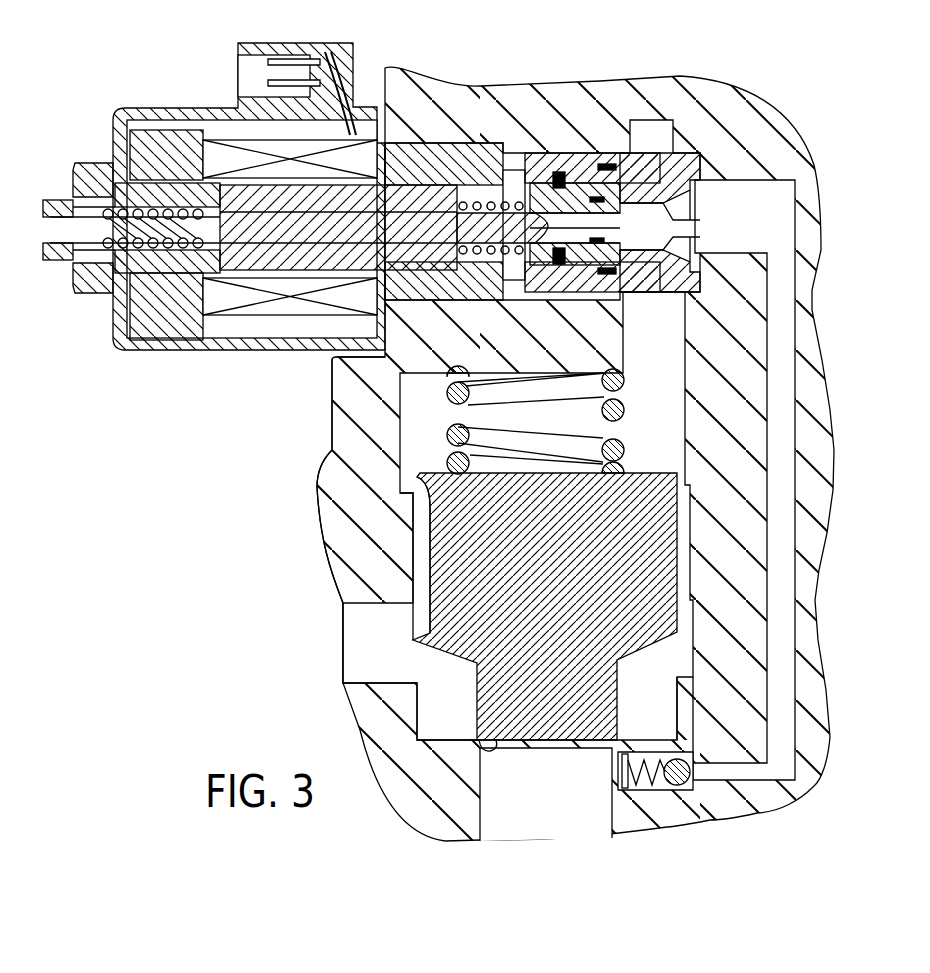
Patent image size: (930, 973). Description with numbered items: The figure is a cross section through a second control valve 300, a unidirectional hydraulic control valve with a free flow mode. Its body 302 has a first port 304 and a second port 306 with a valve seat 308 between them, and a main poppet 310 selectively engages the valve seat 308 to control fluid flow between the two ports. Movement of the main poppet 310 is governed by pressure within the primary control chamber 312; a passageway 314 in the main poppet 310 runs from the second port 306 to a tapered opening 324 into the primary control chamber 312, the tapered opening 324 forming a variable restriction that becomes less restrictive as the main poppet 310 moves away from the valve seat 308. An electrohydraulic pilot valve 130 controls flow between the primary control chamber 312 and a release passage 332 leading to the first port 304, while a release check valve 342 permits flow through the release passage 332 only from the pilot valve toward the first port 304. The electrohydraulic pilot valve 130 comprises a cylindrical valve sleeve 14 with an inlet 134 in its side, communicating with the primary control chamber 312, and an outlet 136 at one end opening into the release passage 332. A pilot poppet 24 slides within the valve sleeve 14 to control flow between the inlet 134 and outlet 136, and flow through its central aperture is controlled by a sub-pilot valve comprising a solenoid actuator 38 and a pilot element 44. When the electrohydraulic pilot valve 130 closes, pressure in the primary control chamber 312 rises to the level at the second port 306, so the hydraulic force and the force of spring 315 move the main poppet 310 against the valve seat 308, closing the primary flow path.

The valve sleeve 14 is at (608, 158).
The pilot poppet 24 is at (588, 185).
The solenoid actuator 38 is at (292, 300).
The pilot element 44 is at (449, 222).
The electrohydraulic pilot valve 130 is at (165, 107).
The inlet 134 is at (637, 288).
The outlet 136 is at (700, 250).
The second control valve 300 is at (293, 659).
The body 302 is at (355, 400).
The first port 304 is at (511, 838).
The second port 306 is at (388, 677).
The valve seat 308 is at (492, 738).
The main poppet 310 is at (430, 537).
The primary control chamber 312 is at (405, 424).
The passageway 314 is at (430, 578).
The spring 315 is at (624, 411).
The tapered opening 324 is at (410, 487).
The release passage 332 is at (744, 244).
The release check valve 342 is at (671, 768).